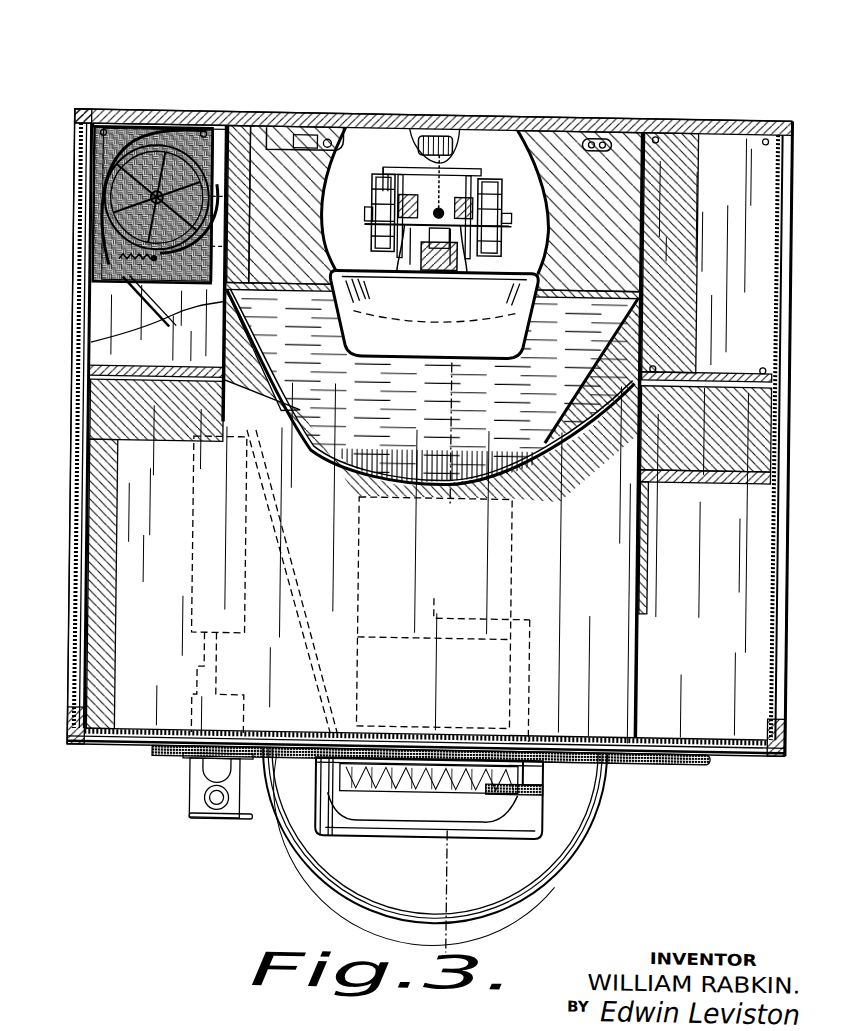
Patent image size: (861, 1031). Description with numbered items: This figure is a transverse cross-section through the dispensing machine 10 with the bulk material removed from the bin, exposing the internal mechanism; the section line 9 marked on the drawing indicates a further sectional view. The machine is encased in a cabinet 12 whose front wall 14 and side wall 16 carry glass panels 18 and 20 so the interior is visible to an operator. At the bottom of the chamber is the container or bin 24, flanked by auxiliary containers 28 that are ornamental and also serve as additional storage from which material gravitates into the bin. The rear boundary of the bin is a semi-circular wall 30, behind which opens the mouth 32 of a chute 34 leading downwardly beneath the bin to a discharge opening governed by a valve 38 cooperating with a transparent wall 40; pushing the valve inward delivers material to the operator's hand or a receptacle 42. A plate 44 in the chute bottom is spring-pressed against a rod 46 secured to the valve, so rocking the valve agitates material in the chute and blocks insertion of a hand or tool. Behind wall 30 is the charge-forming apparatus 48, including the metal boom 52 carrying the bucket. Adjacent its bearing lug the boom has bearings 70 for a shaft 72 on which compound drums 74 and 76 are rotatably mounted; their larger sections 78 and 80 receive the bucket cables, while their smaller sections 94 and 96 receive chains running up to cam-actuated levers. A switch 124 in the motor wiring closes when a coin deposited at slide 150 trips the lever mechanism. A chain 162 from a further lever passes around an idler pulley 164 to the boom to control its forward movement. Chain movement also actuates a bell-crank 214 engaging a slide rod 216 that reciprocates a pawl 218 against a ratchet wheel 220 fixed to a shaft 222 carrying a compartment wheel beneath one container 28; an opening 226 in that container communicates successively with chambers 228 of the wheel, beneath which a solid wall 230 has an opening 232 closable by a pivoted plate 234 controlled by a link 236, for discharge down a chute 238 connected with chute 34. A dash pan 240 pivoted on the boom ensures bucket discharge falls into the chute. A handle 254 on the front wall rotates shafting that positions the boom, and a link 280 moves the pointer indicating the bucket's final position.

The section line 9 is at (455, 366).
The dispensing machine 10 is at (177, 70).
The cabinet 12 is at (68, 553).
The front wall 14 is at (768, 753).
The side wall 16 is at (67, 422).
The panel 18 is at (714, 755).
The panel 20 is at (78, 466).
The container or bin 24 is at (147, 705).
The auxiliary containers 28 is at (109, 352).
The semi-circular wall 30 is at (324, 467).
The mouth 32 is at (433, 489).
The chute 34 is at (517, 578).
The valve 38 is at (508, 823).
The transparent wall 40 is at (408, 780).
The receptacle 42 is at (582, 845).
The plate 44 is at (391, 641).
The rod 46 is at (534, 672).
The charge-forming apparatus 48 is at (550, 217).
The boom 52 is at (431, 272).
The bearings 70 is at (448, 175).
The shaft 72 is at (502, 213).
The compound pulley or drum 74 is at (360, 233).
The compound pulley or drum 76 is at (504, 238).
The larger section 78 is at (370, 180).
The larger section 80 is at (487, 199).
The smaller section 94 is at (418, 135).
The smaller section 96 is at (440, 165).
The switch 124 is at (198, 600).
The slide 150 is at (225, 828).
The chain 162 is at (431, 128).
The idler pulley 164 is at (446, 130).
The bell-crank 214 is at (344, 123).
The slide rod 216 is at (277, 124).
The pawl 218 is at (136, 133).
The ratchet wheel 220 is at (73, 125).
The shaft 222 is at (114, 118).
The opening 226 is at (194, 133).
The chambers 228 is at (112, 212).
The solid wall 230 is at (122, 286).
The opening 232 is at (191, 247).
The plate 234 is at (225, 261).
The link 236 is at (295, 592).
The chute 238 is at (166, 315).
The dash pan 240 is at (382, 343).
The handle 254 is at (551, 786).
The link 280 is at (588, 140).